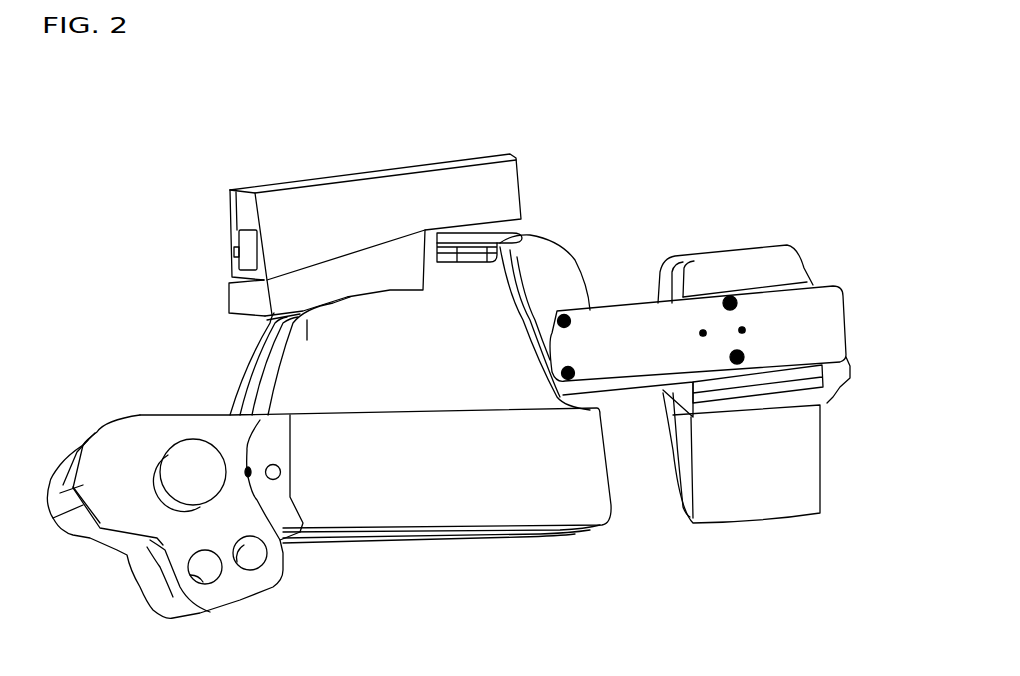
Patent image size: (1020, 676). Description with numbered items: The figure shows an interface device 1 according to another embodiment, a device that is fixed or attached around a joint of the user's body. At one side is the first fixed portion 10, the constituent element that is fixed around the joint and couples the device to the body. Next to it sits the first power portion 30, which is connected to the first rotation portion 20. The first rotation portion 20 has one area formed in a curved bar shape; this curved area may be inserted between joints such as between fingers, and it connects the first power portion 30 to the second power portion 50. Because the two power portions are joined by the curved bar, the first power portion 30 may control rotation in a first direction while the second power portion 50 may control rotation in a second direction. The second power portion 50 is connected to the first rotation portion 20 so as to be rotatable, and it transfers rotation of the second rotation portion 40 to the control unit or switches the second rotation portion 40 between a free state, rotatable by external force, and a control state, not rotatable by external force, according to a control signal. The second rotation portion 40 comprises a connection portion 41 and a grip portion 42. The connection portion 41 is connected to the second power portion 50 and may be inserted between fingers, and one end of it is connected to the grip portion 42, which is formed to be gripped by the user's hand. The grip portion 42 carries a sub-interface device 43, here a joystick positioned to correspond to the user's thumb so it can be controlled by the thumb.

The interface device 1 is at (640, 133).
The first fixed portion 10 is at (787, 483).
The first rotation portion 20 is at (540, 270).
The first power portion 30 is at (822, 308).
The second rotation portion 40 is at (229, 413).
The connection portion 41 is at (250, 374).
The grip portion 42 is at (467, 503).
The sub-interface device 43 is at (200, 487).
The second power portion 50 is at (418, 190).